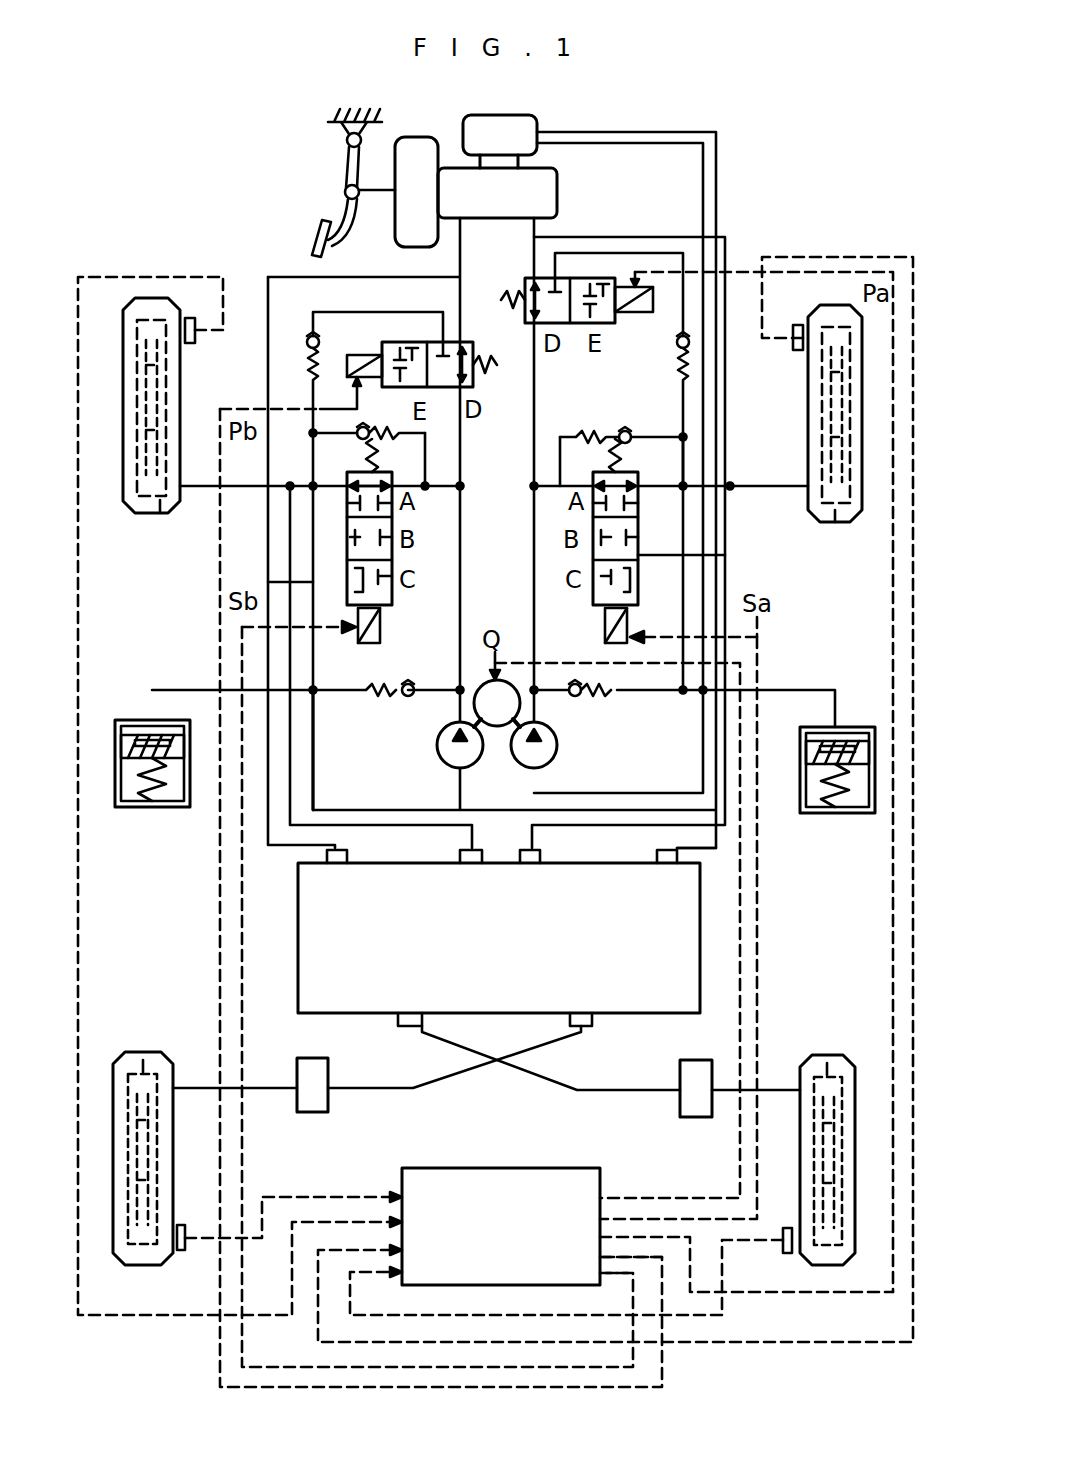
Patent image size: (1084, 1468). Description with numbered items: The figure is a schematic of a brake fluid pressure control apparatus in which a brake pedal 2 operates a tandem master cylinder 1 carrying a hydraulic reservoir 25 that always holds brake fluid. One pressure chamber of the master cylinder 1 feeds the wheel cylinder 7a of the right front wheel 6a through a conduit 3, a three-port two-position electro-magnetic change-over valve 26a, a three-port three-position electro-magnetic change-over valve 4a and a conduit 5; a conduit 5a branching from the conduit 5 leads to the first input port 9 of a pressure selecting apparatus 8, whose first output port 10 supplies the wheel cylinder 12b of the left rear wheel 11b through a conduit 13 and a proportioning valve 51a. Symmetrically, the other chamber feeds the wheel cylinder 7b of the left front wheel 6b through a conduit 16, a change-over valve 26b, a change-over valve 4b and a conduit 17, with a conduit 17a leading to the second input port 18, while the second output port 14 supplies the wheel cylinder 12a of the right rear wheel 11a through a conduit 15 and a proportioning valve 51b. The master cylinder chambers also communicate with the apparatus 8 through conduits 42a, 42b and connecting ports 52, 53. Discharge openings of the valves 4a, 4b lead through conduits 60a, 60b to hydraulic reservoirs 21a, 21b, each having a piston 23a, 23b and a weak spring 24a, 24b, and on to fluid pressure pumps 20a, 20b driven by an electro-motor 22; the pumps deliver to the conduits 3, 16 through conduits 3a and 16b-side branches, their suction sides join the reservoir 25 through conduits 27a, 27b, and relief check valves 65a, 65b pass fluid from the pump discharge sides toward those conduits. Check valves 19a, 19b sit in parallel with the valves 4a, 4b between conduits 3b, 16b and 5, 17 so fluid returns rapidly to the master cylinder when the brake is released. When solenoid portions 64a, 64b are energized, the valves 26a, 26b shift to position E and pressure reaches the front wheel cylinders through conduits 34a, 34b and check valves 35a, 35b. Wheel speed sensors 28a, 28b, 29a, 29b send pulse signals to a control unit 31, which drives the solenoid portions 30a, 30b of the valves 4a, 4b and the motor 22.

The tandem master cylinder 1 is at (560, 187).
The brake pedal 2 is at (313, 240).
The conduit 3 is at (534, 237).
The conduit 3a is at (534, 516).
The conduit 3b is at (562, 506).
The three-port three-position electro-magnetic change-over valve 4a is at (660, 467).
The three-port three-position electro-magnetic change-over valve 4b is at (410, 467).
The conduit 5 is at (758, 486).
The conduit 5a is at (732, 515).
The right front wheel 6a is at (812, 405).
The left front wheel 6b is at (171, 385).
The wheel cylinder 7a is at (838, 522).
The wheel cylinder 7b is at (160, 513).
The pressure selecting apparatus 8 is at (536, 940).
The first input port 9 is at (537, 862).
The first output port 10 is at (586, 1025).
The right rear wheel 11a is at (804, 1150).
The left rear wheel 11b is at (166, 1149).
The wheel cylinder 12a is at (828, 1060).
The wheel cylinder 12b is at (143, 1060).
The conduit 13 is at (462, 1086).
The second output port 14 is at (402, 1025).
The conduit 15 is at (537, 1086).
The conduit 16 is at (460, 263).
The conduit 16b is at (460, 495).
The conduit 17 is at (238, 486).
The conduit 17a is at (290, 528).
The second input port 18 is at (476, 862).
The check valve 19a is at (620, 433).
The check valve 19b is at (365, 432).
The fluid pressure pump 20a is at (558, 745).
The fluid pressure pump 20b is at (436, 745).
The hydraulic reservoir 21a is at (832, 753).
The hydraulic reservoir 21b is at (151, 748).
The electro-motor 22 is at (496, 726).
The piston 23a is at (822, 738).
The piston 23b is at (160, 736).
The weak spring 24a is at (836, 808).
The weak spring 24b is at (158, 804).
The hydraulic reservoir 25 is at (494, 125).
The three-port two-position electro-magnetic change-over valve 26a is at (548, 280).
The three-port two-position electro-magnetic change-over valve 26b is at (398, 342).
The conduit 27a is at (703, 188).
The conduit 27b is at (716, 188).
The wheel speed sensor 28a is at (798, 324).
The wheel speed sensor 28b is at (192, 317).
The wheel speed sensor 29a is at (788, 1254).
The wheel speed sensor 29b is at (181, 1252).
The solenoid portion 30a is at (604, 636).
The solenoid portion 30b is at (380, 636).
The control unit 31 is at (486, 1168).
The conduit 34a is at (630, 253).
The conduit 34b is at (412, 317).
The check valve 35a is at (689, 345).
The check valve 35b is at (307, 345).
The conduit 42a is at (725, 238).
The conduit 42b is at (270, 260).
The proportioning valve 51a is at (314, 1112).
The proportioning valve 51b is at (700, 1117).
The connecting port 52 is at (657, 862).
The connecting port 53 is at (340, 862).
The conduit 60a is at (712, 554).
The conduit 60b is at (267, 564).
The solenoid portion 64a is at (630, 313).
The solenoid portion 64b is at (356, 373).
The check valve 65a is at (584, 696).
The check valve 65b is at (400, 696).